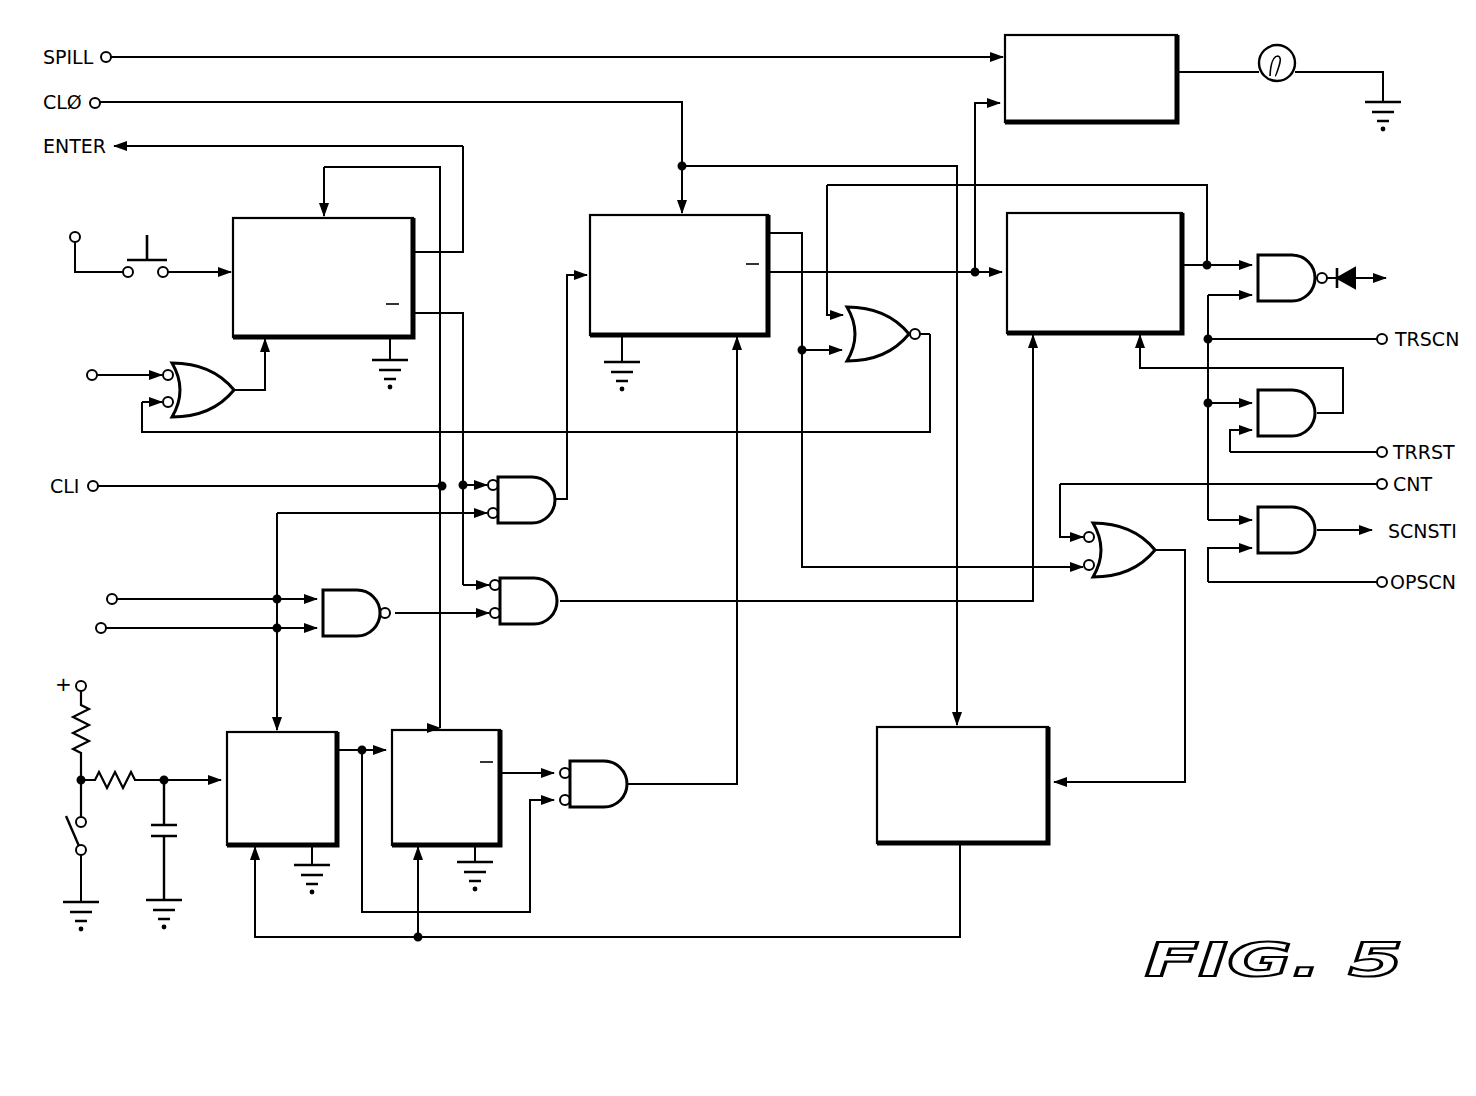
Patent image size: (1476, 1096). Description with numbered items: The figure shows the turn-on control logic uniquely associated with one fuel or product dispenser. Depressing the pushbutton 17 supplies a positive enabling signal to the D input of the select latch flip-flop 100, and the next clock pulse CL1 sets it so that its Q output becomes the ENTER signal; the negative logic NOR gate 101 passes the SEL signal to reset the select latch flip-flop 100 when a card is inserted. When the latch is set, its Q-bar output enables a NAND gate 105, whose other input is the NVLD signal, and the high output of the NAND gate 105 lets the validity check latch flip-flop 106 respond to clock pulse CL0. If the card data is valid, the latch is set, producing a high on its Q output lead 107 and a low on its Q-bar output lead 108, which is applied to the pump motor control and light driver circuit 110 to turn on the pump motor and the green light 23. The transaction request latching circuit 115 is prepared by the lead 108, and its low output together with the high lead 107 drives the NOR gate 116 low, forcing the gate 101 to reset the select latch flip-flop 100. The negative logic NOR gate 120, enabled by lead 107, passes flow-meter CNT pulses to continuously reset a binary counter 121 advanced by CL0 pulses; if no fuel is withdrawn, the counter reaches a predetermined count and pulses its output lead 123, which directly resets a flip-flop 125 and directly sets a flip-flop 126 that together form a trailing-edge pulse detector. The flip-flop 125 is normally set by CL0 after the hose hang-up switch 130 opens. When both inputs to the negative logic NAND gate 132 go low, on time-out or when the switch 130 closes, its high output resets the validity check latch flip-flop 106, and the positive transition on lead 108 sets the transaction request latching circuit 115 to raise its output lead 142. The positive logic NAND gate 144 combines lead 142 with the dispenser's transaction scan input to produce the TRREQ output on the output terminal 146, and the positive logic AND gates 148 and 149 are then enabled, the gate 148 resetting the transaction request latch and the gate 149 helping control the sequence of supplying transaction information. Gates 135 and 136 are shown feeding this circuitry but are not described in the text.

The pushbutton 17 is at (150, 250).
The green light 23 is at (1291, 50).
The select latch flip-flop 100 is at (405, 218).
The negative logic NOR gate 101 is at (222, 405).
The NAND gate 105 is at (535, 523).
The validity check latch flip-flop 106 is at (703, 198).
The Q output lead 107 is at (790, 233).
The Q-bar output lead 108 is at (870, 254).
The pump motor control and light driver circuit 110 is at (1135, 122).
The transaction request latching circuit 115 is at (1118, 196).
The NOR gate 116 is at (870, 308).
The negative logic NOR gate 120 is at (1110, 577).
The binary counter 121 is at (989, 710).
The output lead 123 is at (700, 937).
The flip-flop 125 is at (296, 715).
The flip-flop 126 is at (471, 713).
The hose hang-up switch 130 is at (72, 830).
The negative logic NAND gate 132 is at (590, 761).
The NAND gate 135 is at (343, 590).
The NAND gate 136 is at (528, 578).
The output lead 142 is at (1189, 268).
The positive logic NAND gate 144 is at (1270, 254).
The output terminal 146 is at (1376, 250).
The positive logic AND gate 148 is at (1300, 436).
The positive logic AND gate 149 is at (1300, 553).